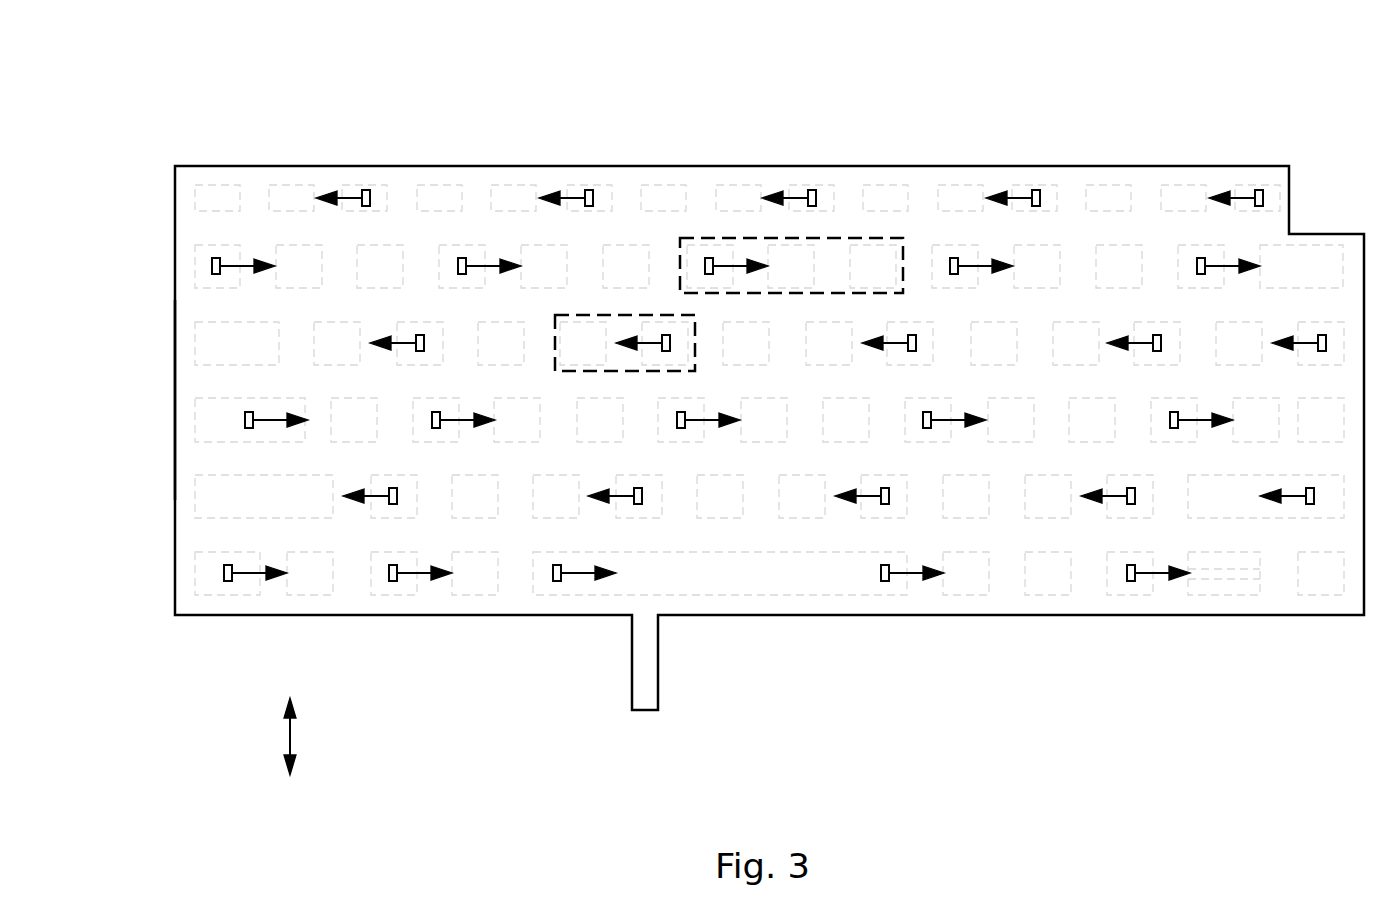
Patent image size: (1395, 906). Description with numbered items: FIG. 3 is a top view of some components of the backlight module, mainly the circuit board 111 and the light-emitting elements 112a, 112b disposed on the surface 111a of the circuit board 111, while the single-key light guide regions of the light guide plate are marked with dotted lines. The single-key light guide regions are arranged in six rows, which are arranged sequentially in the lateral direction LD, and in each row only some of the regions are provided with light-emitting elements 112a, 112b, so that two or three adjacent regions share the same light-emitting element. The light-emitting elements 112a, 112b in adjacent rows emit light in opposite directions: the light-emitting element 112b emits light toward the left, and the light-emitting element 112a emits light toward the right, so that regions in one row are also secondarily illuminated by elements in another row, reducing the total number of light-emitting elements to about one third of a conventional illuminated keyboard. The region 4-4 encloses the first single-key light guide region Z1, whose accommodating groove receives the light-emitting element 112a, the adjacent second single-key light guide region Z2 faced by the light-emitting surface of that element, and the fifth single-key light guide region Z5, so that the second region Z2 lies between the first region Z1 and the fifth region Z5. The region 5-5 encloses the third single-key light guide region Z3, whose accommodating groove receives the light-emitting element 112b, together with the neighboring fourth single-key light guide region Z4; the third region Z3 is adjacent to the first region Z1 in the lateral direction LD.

The circuit board 111 is at (165, 117).
The surface of the circuit board 111a is at (195, 380).
The light-emitting element 112a is at (690, 263).
The light-emitting element 112b is at (666, 358).
The first single-key light guide region Z1 is at (710, 247).
The second single-key light guide region Z2 is at (808, 245).
The third single-key light guide region Z3 is at (658, 318).
The fourth single-key light guide region Z4 is at (580, 318).
The fifth single-key light guide region Z5 is at (872, 245).
The region 4-4 is at (857, 237).
The region 5-5 is at (558, 313).
The lateral direction LD is at (290, 738).